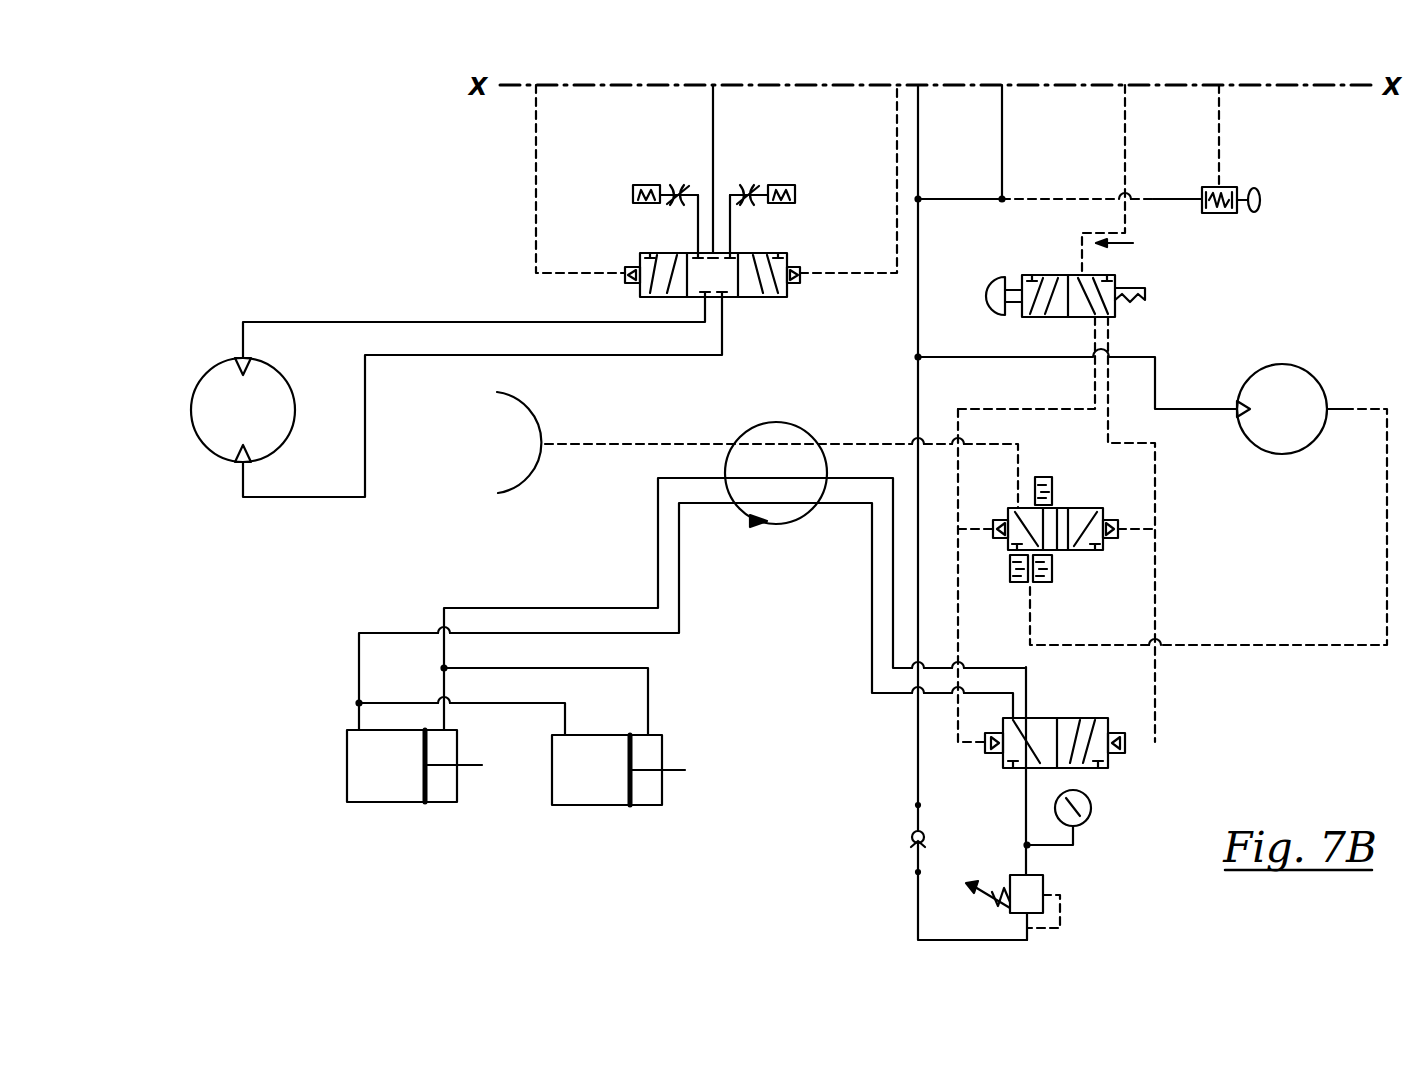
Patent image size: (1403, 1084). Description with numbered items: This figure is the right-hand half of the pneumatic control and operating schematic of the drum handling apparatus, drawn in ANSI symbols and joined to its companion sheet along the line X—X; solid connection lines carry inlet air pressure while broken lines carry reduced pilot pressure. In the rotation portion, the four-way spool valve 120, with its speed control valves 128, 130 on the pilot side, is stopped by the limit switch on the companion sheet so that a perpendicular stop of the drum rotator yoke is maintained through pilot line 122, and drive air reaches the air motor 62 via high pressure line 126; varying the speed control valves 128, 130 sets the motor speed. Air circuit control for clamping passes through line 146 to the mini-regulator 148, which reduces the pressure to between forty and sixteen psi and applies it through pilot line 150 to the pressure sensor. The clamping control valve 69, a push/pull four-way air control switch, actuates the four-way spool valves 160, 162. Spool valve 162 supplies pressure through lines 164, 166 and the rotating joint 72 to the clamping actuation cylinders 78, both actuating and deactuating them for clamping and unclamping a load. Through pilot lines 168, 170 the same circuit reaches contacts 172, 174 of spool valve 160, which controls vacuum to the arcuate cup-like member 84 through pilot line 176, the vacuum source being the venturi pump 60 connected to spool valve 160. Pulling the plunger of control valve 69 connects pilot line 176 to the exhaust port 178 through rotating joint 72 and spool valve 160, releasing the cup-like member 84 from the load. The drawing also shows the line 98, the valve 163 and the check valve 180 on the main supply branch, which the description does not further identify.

The venturi pump 60 is at (1260, 370).
The air motor 62 is at (200, 385).
The clamping control valve 69 is at (990, 292).
The rotating joint 72 is at (787, 423).
The clamping actuation cylinders 78 is at (370, 802).
The cup-like member 84 is at (528, 412).
The supply line 98 is at (1002, 145).
The four-way spool valve 120 is at (775, 252).
The pilot line 122 is at (548, 278).
The high pressure line 126 is at (283, 322).
The speed control valve 128 is at (653, 185).
The speed control valve 130 is at (775, 185).
The line 146 is at (1157, 200).
The mini-regulator 148 is at (1228, 213).
The pilot line 150 is at (1218, 138).
The four-way spool valve 160 is at (1075, 505).
The four-way spool valve 162 is at (1095, 768).
The pressure relief valve 163 is at (1043, 885).
The line 164 is at (658, 525).
The line 166 is at (679, 605).
The pilot line 168 is at (958, 725).
The pilot line 170 is at (1155, 690).
The contact 172 is at (995, 540).
The contact 174 is at (1118, 540).
The pilot line 176 is at (583, 440).
The exhaust port 178 is at (1020, 583).
The check valve 180 is at (912, 843).